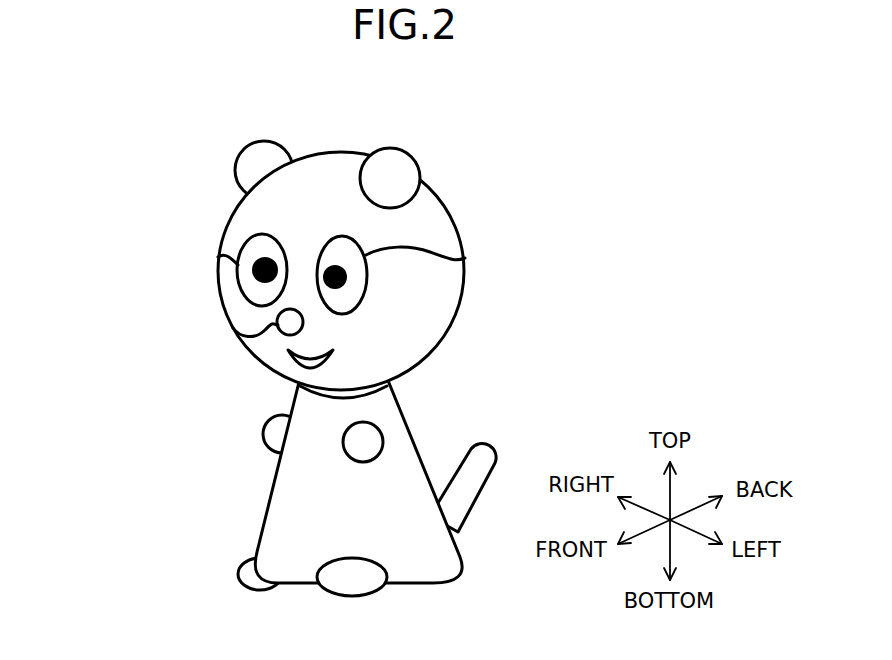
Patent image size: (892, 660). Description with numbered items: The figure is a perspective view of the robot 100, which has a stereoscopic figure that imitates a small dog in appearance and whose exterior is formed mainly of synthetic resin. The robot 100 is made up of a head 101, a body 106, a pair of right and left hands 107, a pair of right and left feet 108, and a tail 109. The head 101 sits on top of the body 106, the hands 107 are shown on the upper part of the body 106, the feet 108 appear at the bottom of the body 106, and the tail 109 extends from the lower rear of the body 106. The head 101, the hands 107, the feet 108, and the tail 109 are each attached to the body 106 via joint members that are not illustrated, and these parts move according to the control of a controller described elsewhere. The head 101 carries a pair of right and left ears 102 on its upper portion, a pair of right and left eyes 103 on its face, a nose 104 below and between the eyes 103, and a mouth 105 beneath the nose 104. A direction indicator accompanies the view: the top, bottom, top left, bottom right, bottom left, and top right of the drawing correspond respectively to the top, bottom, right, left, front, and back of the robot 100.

The robot 100 is at (129, 145).
The head 101 is at (458, 303).
The ears 102 is at (263, 141).
The eyes 103 is at (238, 266).
The nose 104 is at (233, 328).
The mouth 105 is at (288, 364).
The body 106 is at (270, 496).
The hands 107 is at (264, 429).
The feet 108 is at (253, 588).
The tail 109 is at (496, 462).